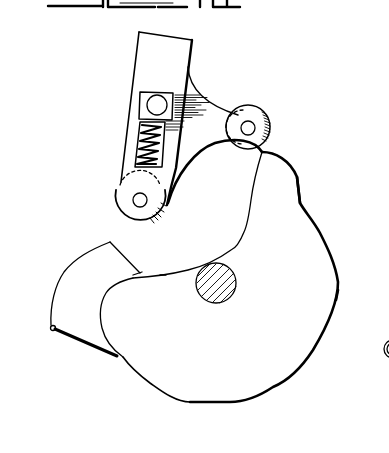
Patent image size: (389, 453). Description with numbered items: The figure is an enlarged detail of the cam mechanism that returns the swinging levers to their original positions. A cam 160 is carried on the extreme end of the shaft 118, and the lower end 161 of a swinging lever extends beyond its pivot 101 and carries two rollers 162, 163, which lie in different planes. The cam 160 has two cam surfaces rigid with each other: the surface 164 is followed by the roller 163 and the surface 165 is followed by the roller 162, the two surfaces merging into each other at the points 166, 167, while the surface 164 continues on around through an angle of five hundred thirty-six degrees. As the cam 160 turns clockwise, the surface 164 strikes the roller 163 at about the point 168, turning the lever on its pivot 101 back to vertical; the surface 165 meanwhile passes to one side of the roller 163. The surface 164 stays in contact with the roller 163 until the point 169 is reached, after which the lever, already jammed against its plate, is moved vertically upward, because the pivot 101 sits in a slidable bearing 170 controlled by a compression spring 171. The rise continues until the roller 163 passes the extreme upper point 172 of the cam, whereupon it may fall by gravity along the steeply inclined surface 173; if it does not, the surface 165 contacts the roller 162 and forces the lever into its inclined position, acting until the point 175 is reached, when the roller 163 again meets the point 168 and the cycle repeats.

The pivot 101 is at (147, 101).
The shaft 118 is at (228, 292).
The cam 160 is at (317, 275).
The lower end of swinging bar 161 is at (177, 53).
The roller 162 is at (116, 199).
The roller 163 is at (264, 111).
The cam surface 164 is at (102, 303).
The cam surface 165 is at (55, 283).
The merging point 166 is at (163, 275).
The merging point 167 is at (321, 328).
The point of cam surface 168 is at (143, 275).
The point of cam surface 169 is at (312, 205).
The slidable bearing 170 is at (140, 113).
The compression spring 171 is at (140, 142).
The extreme upper point of cam 172 is at (264, 152).
The steeply inclined surface 173 is at (243, 232).
The point of cam surface 175 is at (53, 332).